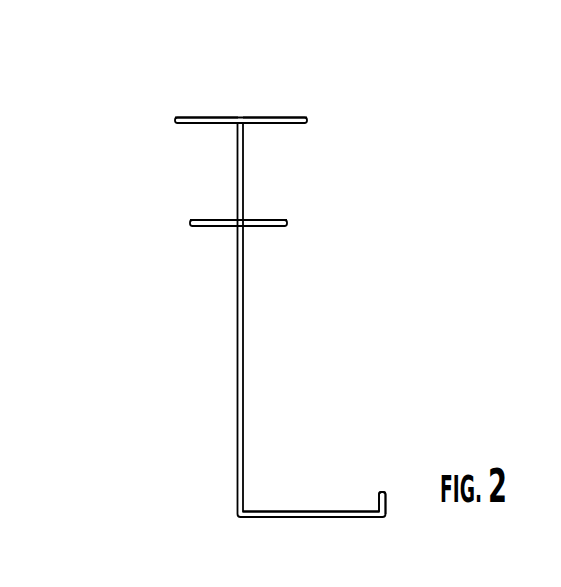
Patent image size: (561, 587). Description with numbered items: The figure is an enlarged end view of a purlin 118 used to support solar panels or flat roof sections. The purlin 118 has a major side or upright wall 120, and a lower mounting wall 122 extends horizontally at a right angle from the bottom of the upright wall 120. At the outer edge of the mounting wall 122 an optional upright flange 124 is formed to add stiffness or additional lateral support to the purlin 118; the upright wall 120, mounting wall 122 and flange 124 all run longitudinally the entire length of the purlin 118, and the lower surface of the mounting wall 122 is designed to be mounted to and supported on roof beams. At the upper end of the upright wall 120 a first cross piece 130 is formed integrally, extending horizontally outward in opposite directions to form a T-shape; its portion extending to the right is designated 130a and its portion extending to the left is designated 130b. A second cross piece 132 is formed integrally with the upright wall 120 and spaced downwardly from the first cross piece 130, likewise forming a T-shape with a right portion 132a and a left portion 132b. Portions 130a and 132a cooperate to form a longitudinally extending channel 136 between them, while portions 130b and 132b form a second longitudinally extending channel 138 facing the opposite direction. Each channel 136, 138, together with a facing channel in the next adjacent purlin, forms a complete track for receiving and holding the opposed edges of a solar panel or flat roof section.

The purlin 118 is at (410, 353).
The upright wall 120 is at (243, 363).
The mounting wall 122 is at (331, 512).
The upright flange 124 is at (388, 502).
The first cross piece 130 is at (195, 127).
The right portion of first cross piece 130a is at (283, 117).
The left portion of first cross piece 130b is at (203, 118).
The second cross piece 132 is at (195, 208).
The right portion of second cross piece 132a is at (273, 220).
The left portion of second cross piece 132b is at (223, 220).
The channel 136 is at (315, 210).
The second channel 138 is at (163, 170).